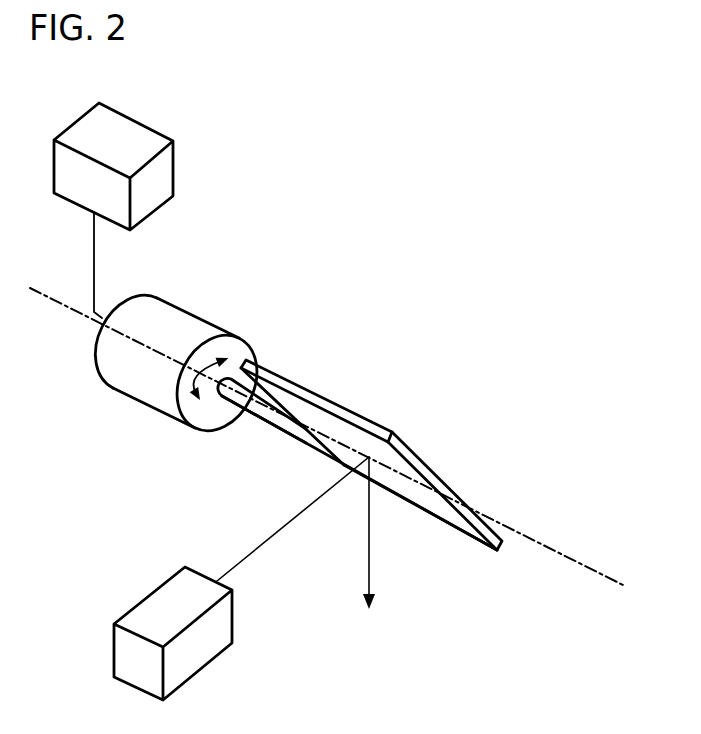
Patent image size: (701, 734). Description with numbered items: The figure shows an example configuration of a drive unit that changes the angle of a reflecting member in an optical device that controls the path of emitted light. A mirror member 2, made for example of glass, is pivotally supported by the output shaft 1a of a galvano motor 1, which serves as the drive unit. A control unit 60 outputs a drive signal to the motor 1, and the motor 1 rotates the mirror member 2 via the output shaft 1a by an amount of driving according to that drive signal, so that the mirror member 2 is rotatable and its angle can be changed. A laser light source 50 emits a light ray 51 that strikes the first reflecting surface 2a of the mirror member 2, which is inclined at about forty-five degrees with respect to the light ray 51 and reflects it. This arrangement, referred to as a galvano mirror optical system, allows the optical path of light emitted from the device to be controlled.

The motor 1 is at (193, 313).
The output shaft 1a is at (267, 422).
The mirror member 2 is at (366, 394).
The first reflecting surface 2a is at (422, 508).
The laser light source 50 is at (152, 590).
The light ray 51 is at (275, 535).
The control unit 60 is at (177, 160).